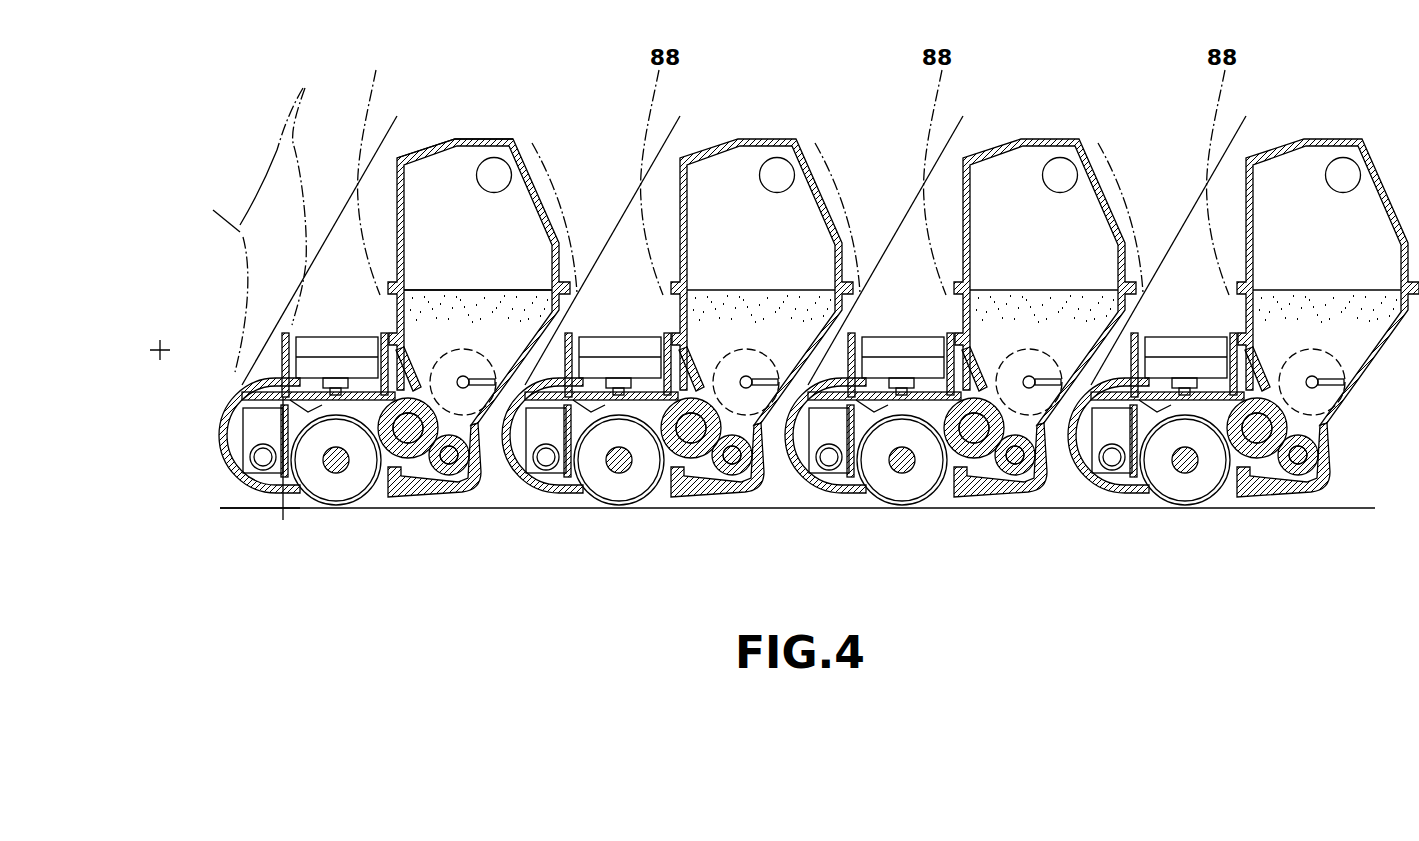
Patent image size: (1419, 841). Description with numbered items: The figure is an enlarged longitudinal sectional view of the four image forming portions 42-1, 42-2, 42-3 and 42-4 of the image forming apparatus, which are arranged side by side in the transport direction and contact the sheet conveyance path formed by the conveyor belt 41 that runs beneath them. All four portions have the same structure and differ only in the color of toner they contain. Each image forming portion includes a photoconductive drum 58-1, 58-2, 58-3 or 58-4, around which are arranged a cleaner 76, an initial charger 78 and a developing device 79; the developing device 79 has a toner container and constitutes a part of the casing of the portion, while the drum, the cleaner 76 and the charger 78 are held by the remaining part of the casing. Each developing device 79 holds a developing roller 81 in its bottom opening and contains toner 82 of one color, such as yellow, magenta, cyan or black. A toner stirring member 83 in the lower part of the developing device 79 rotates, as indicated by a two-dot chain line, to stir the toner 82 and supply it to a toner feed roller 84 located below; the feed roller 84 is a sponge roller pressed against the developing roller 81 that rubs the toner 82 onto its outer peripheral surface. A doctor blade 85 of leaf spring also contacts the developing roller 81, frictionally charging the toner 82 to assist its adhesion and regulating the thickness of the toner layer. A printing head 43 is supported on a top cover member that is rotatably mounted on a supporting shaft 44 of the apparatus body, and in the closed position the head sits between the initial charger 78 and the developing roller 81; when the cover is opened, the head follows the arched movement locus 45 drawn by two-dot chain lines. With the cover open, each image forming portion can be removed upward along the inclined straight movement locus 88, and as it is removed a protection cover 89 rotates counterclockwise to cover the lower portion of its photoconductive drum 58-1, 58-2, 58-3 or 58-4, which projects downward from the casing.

The conveyor belt 41 is at (247, 510).
The image forming portion 42-1 is at (1328, 245).
The image forming portion 42-2 is at (1045, 244).
The image forming portion 42-3 is at (762, 240).
The image forming portion 42-4 is at (487, 140).
The printing head 43 is at (318, 345).
The supporting shaft 44 is at (160, 360).
The movement locus of printing head 45 is at (264, 216).
The photoconductive drum 58-1 is at (1185, 495).
The photoconductive drum 58-2 is at (902, 495).
The photoconductive drum 58-3 is at (619, 495).
The photoconductive drum 58-4 is at (343, 493).
The cleaner 76 is at (278, 472).
The initial charger 78 is at (282, 386).
The developing device 79 is at (430, 152).
The developing roller 81 is at (413, 453).
The toner 82 is at (432, 297).
The toner stirring member 83 is at (483, 390).
The toner feed roller 84 is at (430, 478).
The doctor blade 85 is at (397, 347).
The movement locus of image forming portion 88 is at (319, 215).
The protection cover 89 is at (224, 453).